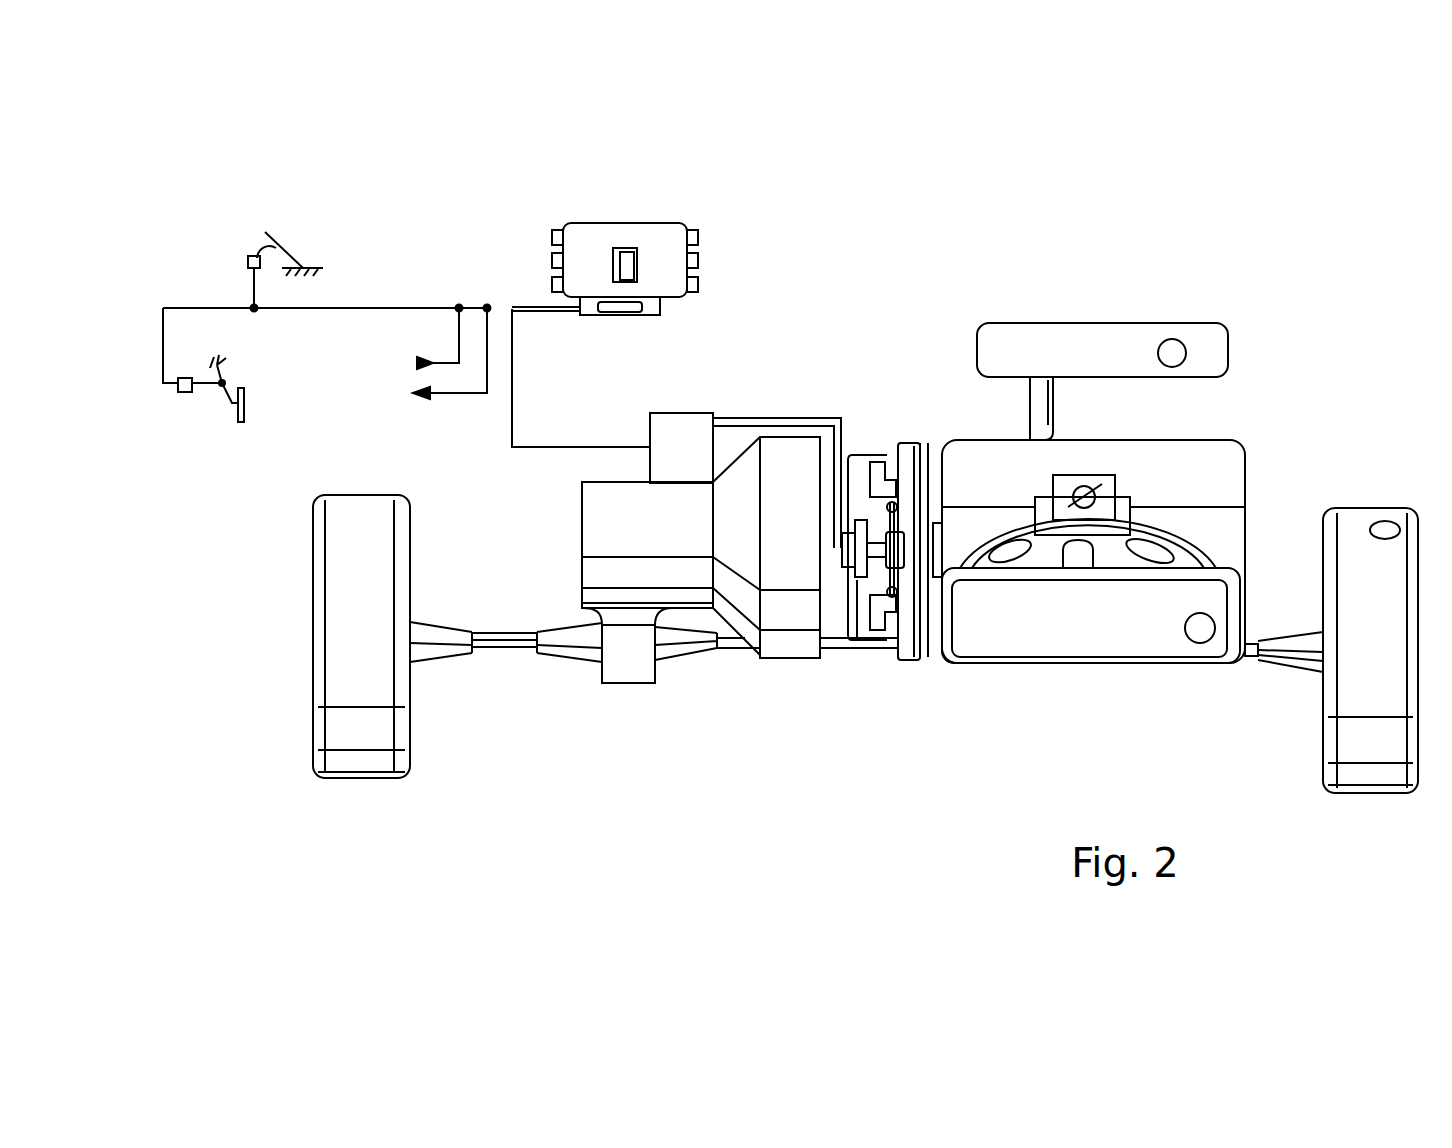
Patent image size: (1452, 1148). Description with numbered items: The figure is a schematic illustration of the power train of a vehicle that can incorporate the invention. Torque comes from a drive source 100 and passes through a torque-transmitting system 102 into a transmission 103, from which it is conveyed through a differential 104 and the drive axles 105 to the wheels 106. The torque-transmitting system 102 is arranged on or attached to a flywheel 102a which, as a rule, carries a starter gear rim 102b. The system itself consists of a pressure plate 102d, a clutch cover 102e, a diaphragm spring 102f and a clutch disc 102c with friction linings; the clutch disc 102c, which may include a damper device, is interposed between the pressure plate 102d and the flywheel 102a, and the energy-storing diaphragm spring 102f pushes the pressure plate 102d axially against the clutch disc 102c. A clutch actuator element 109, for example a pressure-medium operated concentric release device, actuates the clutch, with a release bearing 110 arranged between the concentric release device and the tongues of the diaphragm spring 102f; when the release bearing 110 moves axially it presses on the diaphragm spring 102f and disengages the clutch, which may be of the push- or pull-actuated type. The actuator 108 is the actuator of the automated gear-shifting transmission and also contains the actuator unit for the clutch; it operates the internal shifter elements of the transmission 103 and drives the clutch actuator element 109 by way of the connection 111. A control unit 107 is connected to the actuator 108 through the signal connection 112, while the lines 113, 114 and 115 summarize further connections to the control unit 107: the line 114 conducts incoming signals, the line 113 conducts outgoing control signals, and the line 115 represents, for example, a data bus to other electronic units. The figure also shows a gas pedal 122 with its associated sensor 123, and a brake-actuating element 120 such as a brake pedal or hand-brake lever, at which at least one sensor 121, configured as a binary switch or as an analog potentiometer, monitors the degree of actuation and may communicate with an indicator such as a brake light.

The drive source 100 is at (1174, 474).
The torque-transmitting system 102 is at (916, 540).
The flywheel 102a is at (908, 645).
The starter gear rim 102b is at (928, 445).
The clutch disc 102c is at (892, 470).
The pressure plate 102d is at (873, 460).
The clutch cover 102e is at (868, 653).
The diaphragm spring 102f is at (847, 467).
The transmission 103 is at (793, 612).
The differential 104 is at (623, 657).
The drive shafts 105 is at (507, 650).
The wheels 106 is at (341, 633).
The control unit 107 is at (596, 240).
The actuator 108 is at (660, 461).
The clutch actuator element 109 is at (842, 548).
The release bearing 110 is at (857, 602).
The connection 111 is at (766, 418).
The signal connection 112 is at (578, 447).
The line 113 is at (447, 397).
The line 114 is at (447, 362).
The line 115 is at (447, 308).
The brake-actuating element 120 is at (244, 412).
The sensor 121 is at (183, 392).
The gas pedal 122 is at (265, 232).
The sensor 123 is at (248, 262).